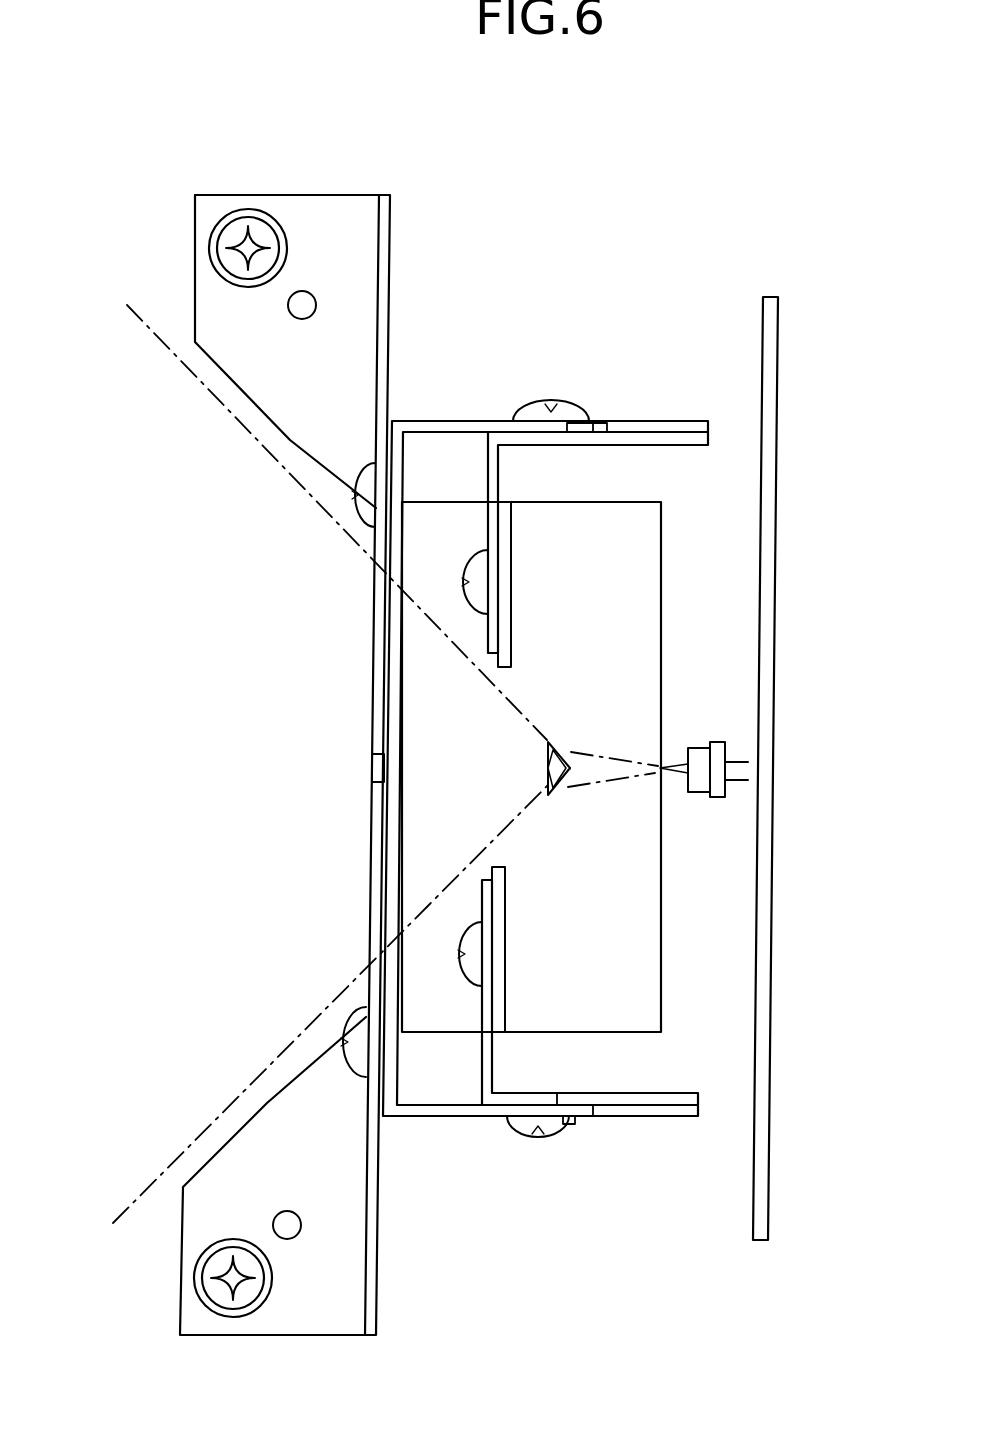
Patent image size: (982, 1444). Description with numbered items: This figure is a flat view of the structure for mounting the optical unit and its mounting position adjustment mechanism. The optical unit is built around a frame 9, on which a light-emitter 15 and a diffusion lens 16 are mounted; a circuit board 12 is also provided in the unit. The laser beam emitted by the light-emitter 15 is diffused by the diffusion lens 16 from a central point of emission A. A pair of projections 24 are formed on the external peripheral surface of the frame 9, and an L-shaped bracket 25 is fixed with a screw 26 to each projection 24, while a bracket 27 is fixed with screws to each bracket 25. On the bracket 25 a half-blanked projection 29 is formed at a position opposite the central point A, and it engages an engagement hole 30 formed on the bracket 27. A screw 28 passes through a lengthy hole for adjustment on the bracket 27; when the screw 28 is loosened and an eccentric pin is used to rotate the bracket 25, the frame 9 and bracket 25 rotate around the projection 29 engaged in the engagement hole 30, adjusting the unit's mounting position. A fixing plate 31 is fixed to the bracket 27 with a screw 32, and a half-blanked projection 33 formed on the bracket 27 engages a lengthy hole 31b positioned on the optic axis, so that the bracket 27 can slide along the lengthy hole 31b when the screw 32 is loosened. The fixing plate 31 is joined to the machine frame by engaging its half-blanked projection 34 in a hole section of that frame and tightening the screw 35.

The frame 9 is at (655, 548).
The circuit board 12 is at (772, 1022).
The light-emitter 15 is at (716, 742).
The diffusion lens 16 is at (556, 740).
The projection 24 is at (511, 538).
The L-shaped bracket 25 is at (488, 468).
The screw 26 is at (462, 578).
The bracket 27 is at (422, 420).
The screw 28 is at (552, 400).
The half-blanked projection 29 is at (592, 422).
The engagement hole 30 is at (607, 422).
The fixing plate 31 is at (390, 207).
The lengthy hole 31b is at (372, 790).
The screw 32 is at (356, 488).
The half-blanked projection 33 is at (372, 768).
The half-blanked projection 34 is at (305, 292).
The screw 35 is at (222, 248).
The central point of emission A is at (572, 770).